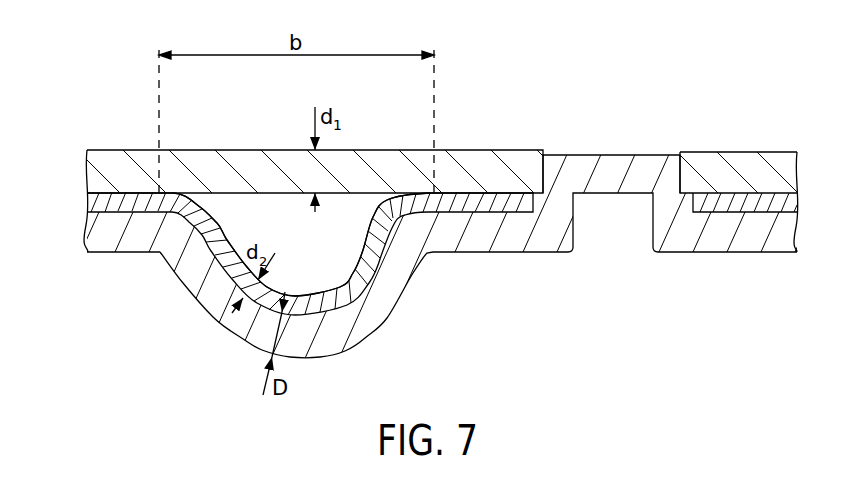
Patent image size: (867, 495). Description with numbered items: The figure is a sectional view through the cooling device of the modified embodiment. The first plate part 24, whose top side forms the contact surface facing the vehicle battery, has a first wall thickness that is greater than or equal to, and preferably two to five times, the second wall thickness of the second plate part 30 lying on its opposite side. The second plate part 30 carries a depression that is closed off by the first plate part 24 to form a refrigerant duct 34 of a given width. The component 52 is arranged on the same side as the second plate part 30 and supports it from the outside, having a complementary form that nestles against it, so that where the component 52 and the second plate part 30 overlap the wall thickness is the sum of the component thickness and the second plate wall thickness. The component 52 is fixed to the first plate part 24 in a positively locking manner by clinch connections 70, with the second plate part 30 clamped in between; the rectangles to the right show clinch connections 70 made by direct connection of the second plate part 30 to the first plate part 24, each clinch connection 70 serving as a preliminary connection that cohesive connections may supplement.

The first plate part 24 is at (192, 173).
The second plate part 30 is at (132, 203).
The refrigerant duct 34 is at (337, 250).
The component 52 is at (128, 237).
The clinch connection 70 is at (613, 175).